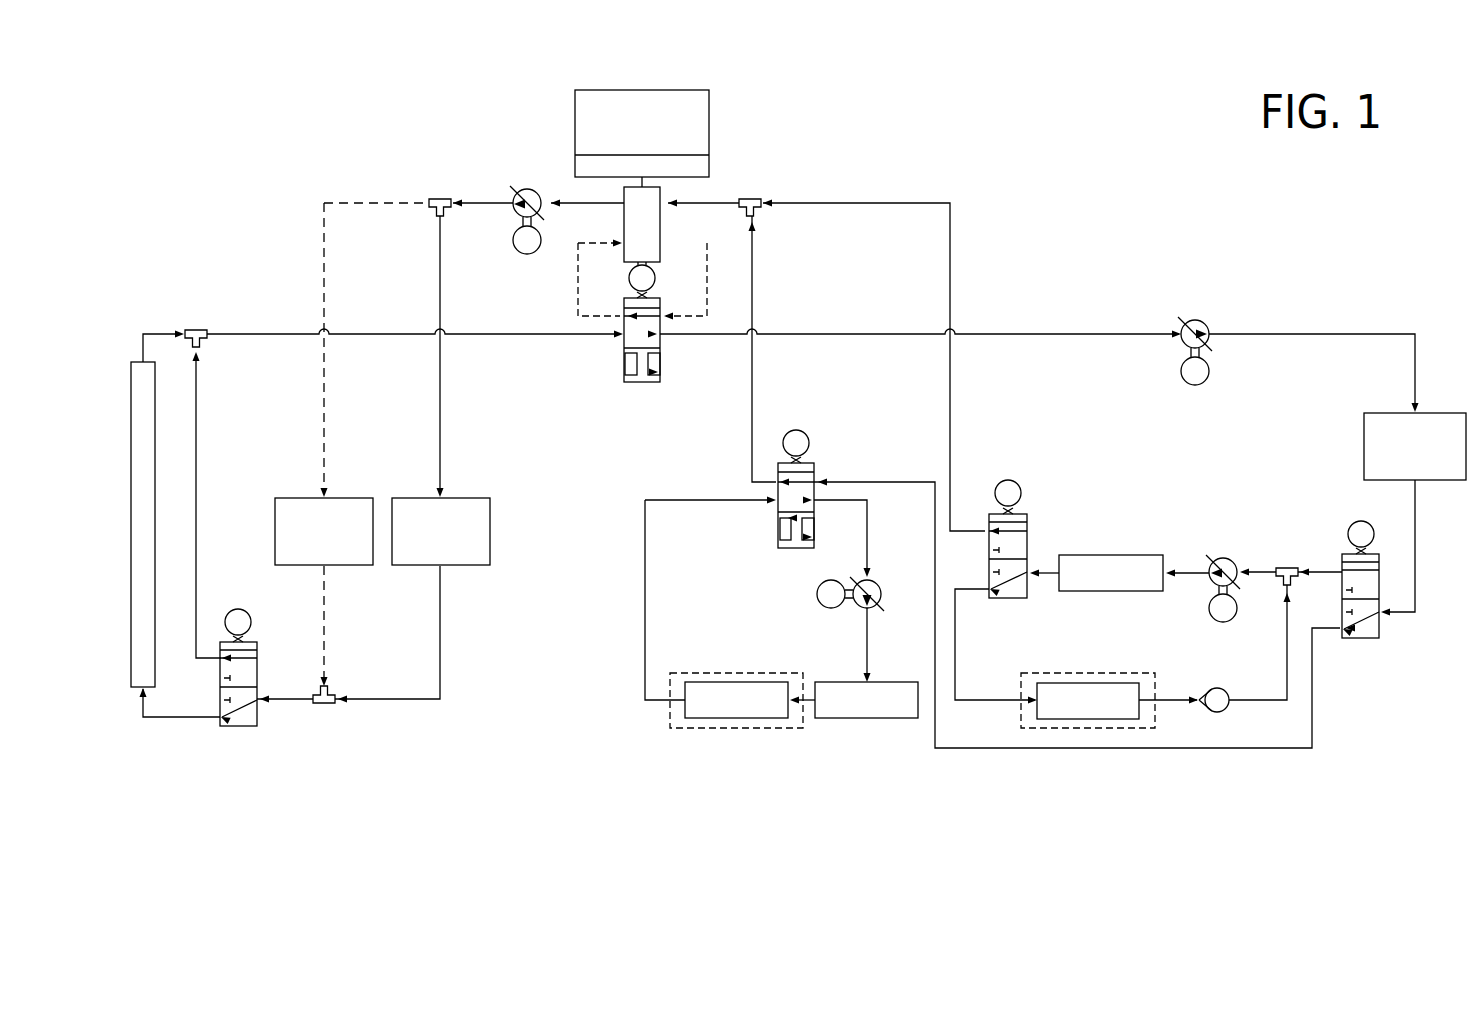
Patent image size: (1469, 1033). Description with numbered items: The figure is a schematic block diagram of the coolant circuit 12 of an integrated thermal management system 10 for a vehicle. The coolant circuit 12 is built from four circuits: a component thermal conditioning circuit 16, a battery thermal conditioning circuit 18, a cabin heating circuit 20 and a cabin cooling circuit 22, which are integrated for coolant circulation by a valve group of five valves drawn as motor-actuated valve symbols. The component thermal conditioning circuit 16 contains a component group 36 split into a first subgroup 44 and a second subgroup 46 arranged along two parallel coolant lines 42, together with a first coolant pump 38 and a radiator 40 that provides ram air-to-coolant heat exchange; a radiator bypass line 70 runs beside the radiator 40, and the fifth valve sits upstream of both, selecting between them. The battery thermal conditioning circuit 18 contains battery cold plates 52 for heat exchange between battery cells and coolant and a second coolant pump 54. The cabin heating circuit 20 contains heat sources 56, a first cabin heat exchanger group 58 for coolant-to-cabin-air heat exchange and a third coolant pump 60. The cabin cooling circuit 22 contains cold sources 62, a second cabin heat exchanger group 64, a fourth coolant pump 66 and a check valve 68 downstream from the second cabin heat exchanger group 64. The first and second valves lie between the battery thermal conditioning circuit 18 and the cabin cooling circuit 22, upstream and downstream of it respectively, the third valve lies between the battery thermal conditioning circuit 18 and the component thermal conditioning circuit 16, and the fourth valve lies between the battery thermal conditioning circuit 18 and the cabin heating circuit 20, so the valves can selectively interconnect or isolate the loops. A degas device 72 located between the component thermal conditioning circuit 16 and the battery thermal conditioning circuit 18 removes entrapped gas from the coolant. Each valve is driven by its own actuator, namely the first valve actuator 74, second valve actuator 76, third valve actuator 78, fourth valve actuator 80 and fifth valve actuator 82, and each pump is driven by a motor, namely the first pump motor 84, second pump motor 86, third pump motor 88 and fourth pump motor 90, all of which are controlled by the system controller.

The integrated thermal management system 10 is at (1015, 145).
The coolant circuit 12 is at (247, 205).
The component thermal conditioning circuit 16 is at (392, 737).
The battery thermal conditioning circuit 18 is at (1365, 314).
The cabin heating circuit 20 is at (768, 745).
The cabin cooling circuit 22 is at (1154, 755).
The component group 36 is at (443, 502).
The first coolant pump 38 is at (503, 218).
The radiator 40 is at (131, 384).
The parallel coolant lines 42 is at (324, 413).
The first subgroup 44 is at (470, 566).
The second subgroup 46 is at (275, 520).
The battery cold plates 52 is at (1362, 428).
The second coolant pump 54 is at (1185, 338).
The heat sources 56 is at (875, 720).
The first cabin heat exchanger group 58 is at (722, 720).
The third coolant pump 60 is at (825, 575).
The cold sources 62 is at (1092, 592).
The second cabin heat exchanger group 64 is at (1065, 729).
The fourth coolant pump 66 is at (1213, 580).
The check valve 68 is at (1225, 708).
The radiator bypass line 70 is at (196, 392).
The degas device 72 is at (736, 145).
The first valve actuator 74 is at (1350, 522).
The second valve actuator 76 is at (1005, 479).
The third valve actuator 78 is at (656, 278).
The fourth valve actuator 80 is at (796, 430).
The fifth valve actuator 82 is at (229, 612).
The first pump motor 84 is at (520, 253).
The second pump motor 86 is at (1184, 383).
The third pump motor 88 is at (817, 598).
The fourth pump motor 90 is at (1216, 622).